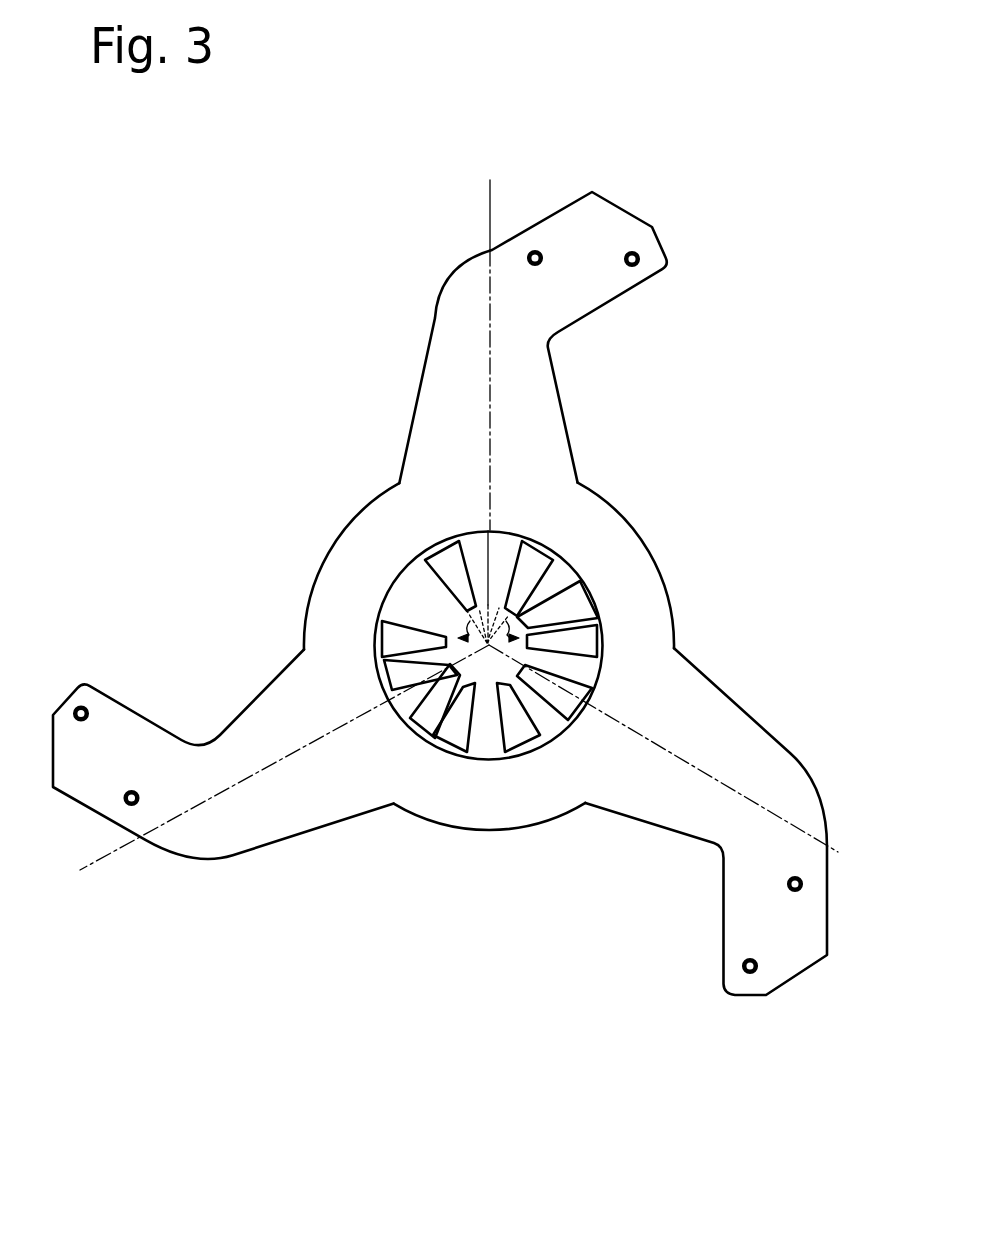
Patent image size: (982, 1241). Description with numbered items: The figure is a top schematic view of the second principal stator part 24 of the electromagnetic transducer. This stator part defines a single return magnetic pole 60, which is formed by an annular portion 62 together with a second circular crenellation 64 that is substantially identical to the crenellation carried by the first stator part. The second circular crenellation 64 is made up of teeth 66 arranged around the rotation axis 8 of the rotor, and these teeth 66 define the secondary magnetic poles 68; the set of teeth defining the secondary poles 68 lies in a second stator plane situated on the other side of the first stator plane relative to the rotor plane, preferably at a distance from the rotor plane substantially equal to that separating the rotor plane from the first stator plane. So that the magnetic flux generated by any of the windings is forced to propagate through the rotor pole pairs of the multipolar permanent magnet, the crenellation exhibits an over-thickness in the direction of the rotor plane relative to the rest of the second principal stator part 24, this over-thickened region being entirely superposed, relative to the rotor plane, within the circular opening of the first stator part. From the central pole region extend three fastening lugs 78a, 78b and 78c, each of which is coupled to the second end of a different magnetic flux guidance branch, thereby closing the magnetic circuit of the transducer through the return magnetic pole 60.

The rotation axis 8 is at (487, 645).
The second principal stator part 24 is at (535, 418).
The return magnetic pole 60 is at (626, 579).
The annular portion 62 is at (380, 527).
The second circular crenellation 64 is at (581, 641).
The teeth 66 is at (548, 583).
The secondary magnetic poles 68 is at (455, 577).
The fastening lug 78a is at (110, 738).
The fastening lug 78b is at (775, 927).
The fastening lug 78c is at (618, 240).